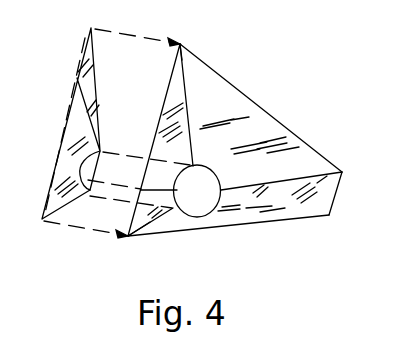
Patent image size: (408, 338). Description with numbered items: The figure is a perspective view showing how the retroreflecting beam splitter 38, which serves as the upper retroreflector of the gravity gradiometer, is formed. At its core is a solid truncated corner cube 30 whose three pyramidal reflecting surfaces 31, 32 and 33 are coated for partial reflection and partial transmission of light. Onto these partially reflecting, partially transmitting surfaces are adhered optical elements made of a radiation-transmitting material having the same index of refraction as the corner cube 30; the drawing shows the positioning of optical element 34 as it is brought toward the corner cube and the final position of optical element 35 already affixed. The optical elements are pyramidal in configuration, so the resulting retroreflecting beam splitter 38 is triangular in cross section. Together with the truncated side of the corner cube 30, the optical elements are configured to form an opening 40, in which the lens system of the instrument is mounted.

The truncated corner cube 30 is at (218, 103).
The pyramidal reflecting surface 31 is at (179, 81).
The pyramidal reflecting surface 32 is at (262, 123).
The pyramidal reflecting surface 33 is at (338, 177).
The optical element 34 is at (72, 145).
The optical element 35 is at (257, 217).
The retroreflecting beam splitter 38 is at (128, 238).
The opening 40 is at (188, 208).